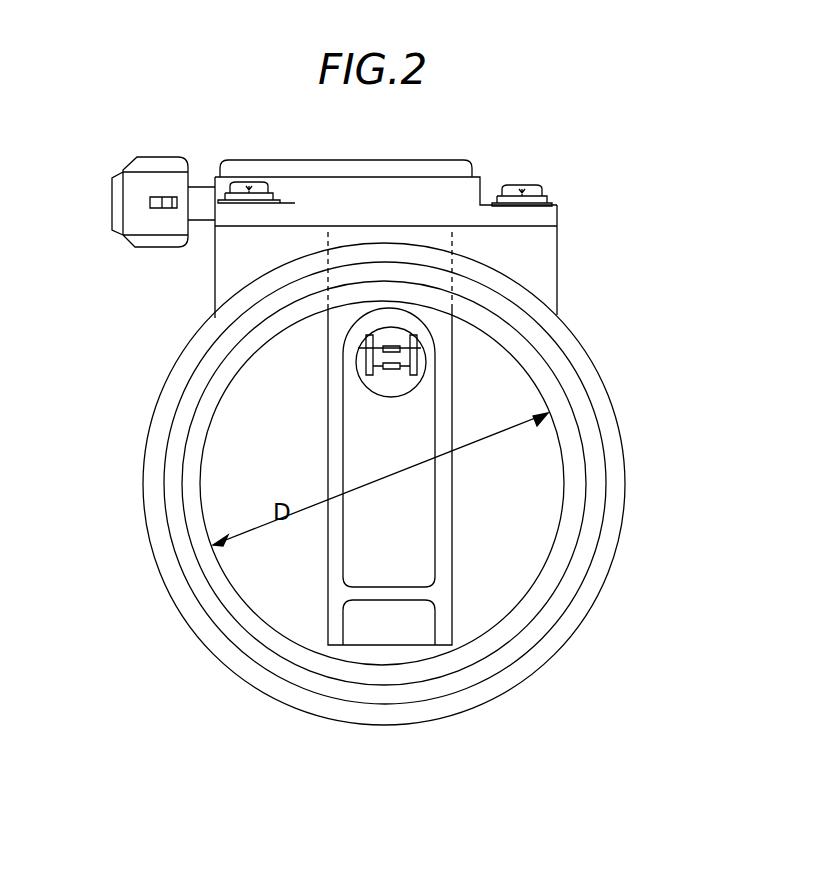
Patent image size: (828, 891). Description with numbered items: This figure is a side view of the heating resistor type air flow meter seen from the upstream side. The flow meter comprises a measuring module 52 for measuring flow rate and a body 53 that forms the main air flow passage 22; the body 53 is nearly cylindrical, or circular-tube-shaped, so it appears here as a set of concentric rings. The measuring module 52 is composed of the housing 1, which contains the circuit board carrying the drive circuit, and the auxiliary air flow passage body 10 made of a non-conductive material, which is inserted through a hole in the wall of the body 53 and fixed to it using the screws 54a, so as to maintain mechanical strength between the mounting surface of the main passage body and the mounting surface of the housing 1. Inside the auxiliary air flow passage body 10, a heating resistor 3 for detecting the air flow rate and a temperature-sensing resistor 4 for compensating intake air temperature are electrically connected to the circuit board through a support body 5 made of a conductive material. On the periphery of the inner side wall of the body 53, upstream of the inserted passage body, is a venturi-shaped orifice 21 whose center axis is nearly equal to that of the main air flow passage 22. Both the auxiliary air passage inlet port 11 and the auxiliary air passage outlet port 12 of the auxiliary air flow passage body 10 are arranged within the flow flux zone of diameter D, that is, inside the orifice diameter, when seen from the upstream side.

The housing 1 is at (424, 160).
The heating resistor 3 is at (386, 335).
The temperature-sensing resistor 4 is at (380, 370).
The support body 5 is at (362, 352).
The auxiliary air flow passage body 10 is at (452, 523).
The auxiliary air passage inlet port 11 is at (427, 367).
The auxiliary air passage outlet port 12 is at (362, 647).
The orifice 21 is at (512, 613).
The main air flow passage 22 is at (528, 525).
The measuring module 52 is at (368, 160).
The body 53 is at (613, 408).
The screws 54a is at (250, 184).